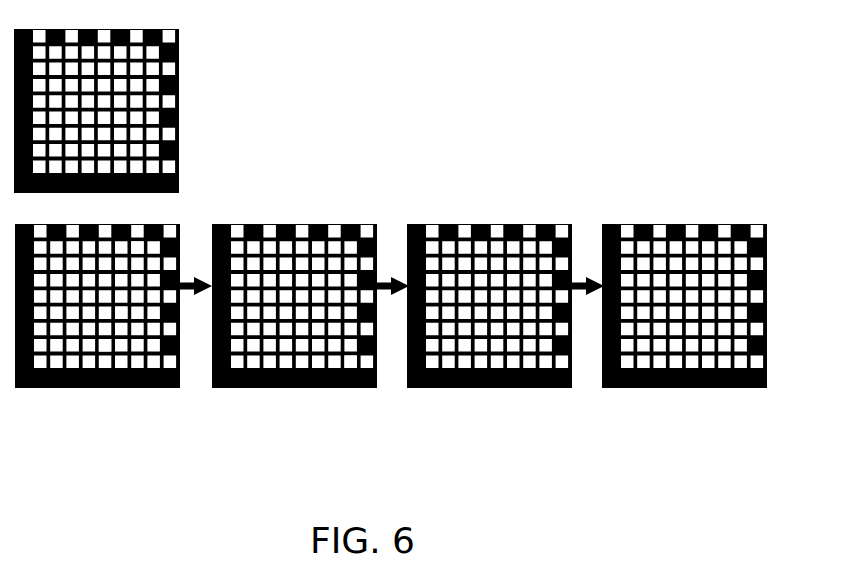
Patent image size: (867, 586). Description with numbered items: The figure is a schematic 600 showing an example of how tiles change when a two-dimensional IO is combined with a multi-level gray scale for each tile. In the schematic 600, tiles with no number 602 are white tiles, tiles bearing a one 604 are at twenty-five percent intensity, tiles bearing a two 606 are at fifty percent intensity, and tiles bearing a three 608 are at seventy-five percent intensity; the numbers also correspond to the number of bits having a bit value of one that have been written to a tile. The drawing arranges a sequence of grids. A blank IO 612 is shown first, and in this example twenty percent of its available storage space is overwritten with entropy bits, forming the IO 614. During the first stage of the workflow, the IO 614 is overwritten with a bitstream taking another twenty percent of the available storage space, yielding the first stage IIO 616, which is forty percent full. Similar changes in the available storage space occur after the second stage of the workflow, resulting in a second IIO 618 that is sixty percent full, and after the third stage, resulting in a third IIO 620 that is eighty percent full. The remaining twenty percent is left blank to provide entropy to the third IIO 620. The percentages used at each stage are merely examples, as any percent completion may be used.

The schematic 600 is at (389, 269).
The tile with no number 602 is at (137, 250).
The tile bearing a "1" 604 is at (125, 319).
The tile bearing a "2" 606 is at (104, 352).
The tile bearing a "3" 608 is at (347, 368).
The blank IO 612 is at (96, 124).
The IO 614 is at (136, 313).
The first stage IIO 616 is at (294, 338).
The second IIO 618 is at (489, 328).
The third IIO 620 is at (684, 328).